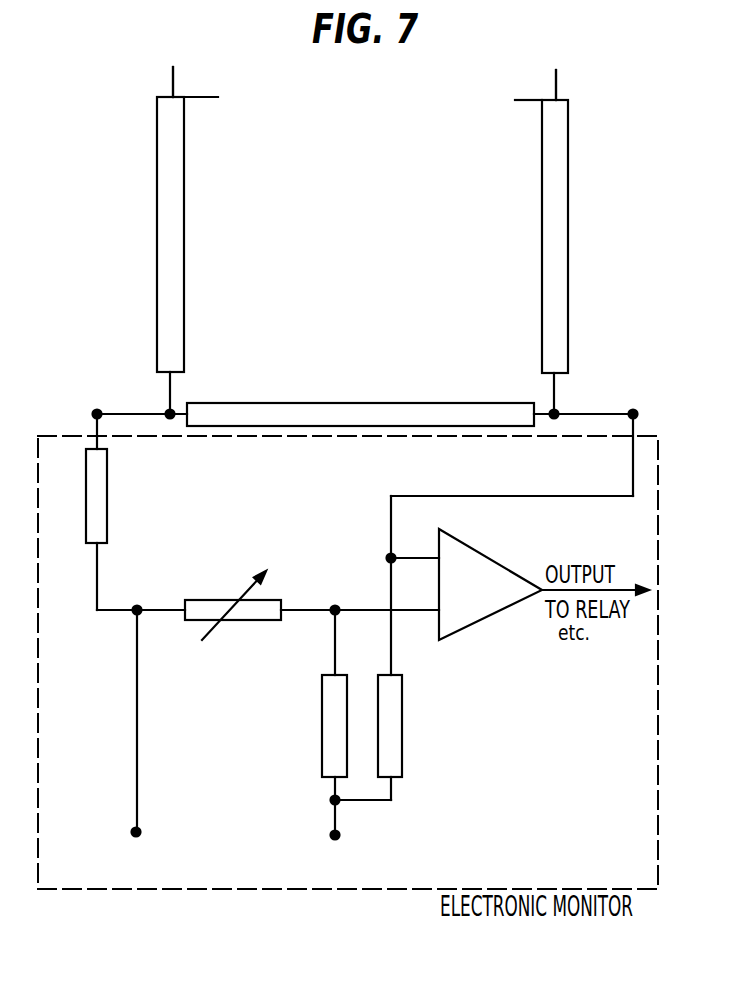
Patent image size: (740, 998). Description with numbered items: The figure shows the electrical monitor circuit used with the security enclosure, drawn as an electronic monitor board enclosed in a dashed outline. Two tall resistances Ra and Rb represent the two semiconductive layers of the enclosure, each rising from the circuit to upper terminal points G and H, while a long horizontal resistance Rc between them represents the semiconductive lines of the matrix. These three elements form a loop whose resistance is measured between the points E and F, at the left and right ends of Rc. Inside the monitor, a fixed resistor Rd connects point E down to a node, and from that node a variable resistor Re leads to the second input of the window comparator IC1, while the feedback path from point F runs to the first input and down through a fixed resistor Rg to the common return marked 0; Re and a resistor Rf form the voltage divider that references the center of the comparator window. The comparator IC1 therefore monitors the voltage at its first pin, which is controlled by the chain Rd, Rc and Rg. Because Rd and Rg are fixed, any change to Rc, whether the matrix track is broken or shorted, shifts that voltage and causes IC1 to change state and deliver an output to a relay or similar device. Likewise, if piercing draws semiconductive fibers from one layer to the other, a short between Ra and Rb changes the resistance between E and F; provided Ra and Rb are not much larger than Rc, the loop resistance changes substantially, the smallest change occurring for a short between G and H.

The semiconductive layer resistance Ra is at (187, 240).
The semiconductive layer resistance Rb is at (555, 242).
The matrix line resistance Rc is at (365, 400).
The fixed resistor Rd is at (109, 512).
The voltage divider resistor Re is at (233, 605).
The voltage divider resistor Rf is at (323, 705).
The fixed resistor Rg is at (402, 648).
The window comparator IC1 is at (544, 584).
The circuit point E is at (100, 401).
The circuit point F is at (631, 402).
The circuit point G is at (191, 99).
The circuit point H is at (540, 102).
The zero volt terminal 0 is at (343, 821).